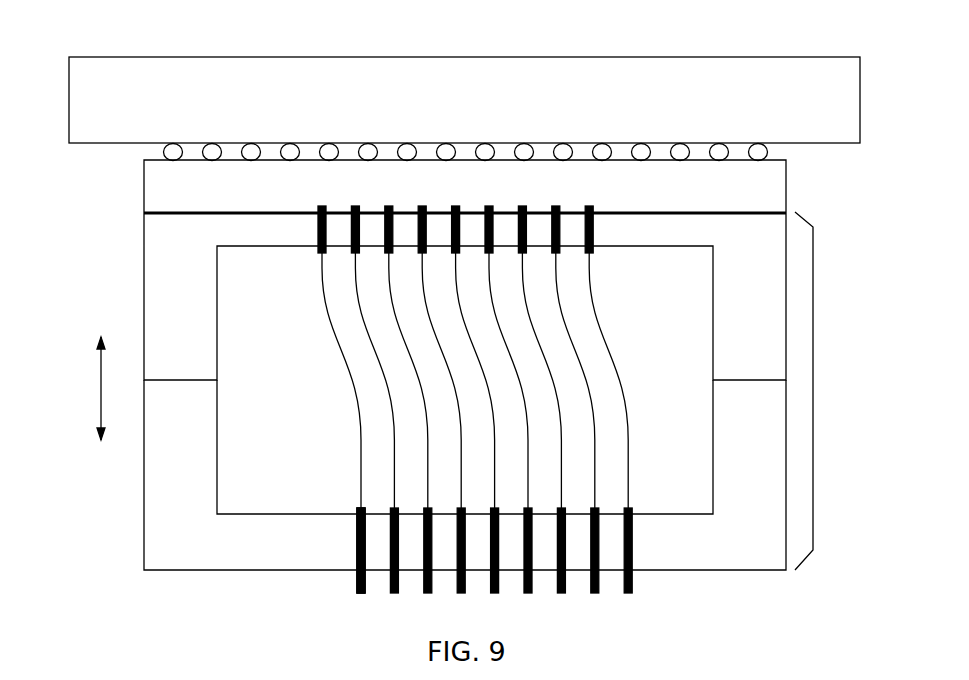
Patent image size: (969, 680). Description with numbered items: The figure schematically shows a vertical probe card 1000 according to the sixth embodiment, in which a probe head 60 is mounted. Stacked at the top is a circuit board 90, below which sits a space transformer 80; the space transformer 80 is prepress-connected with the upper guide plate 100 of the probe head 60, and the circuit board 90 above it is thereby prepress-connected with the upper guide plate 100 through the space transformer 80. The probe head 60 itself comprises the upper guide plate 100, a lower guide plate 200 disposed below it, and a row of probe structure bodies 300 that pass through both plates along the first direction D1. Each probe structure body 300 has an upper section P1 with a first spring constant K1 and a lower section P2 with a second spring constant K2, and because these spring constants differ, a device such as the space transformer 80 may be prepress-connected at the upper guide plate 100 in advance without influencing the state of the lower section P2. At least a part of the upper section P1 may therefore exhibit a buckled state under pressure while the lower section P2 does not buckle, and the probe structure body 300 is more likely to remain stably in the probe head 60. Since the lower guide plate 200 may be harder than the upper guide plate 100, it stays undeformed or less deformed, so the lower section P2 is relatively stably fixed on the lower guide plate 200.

The vertical probe card 1000 is at (100, 29).
The circuit board 90 is at (810, 115).
The space transformer 80 is at (750, 202).
The upper guide plate 100 is at (772, 338).
The lower guide plate 200 is at (772, 451).
The probe structure body 300 is at (632, 543).
The probe head 60 is at (825, 391).
The upper section P1 is at (322, 275).
The first spring constant K1 is at (327, 306).
The lower section P2 is at (357, 528).
The second spring constant K2 is at (357, 550).
The first direction D1 is at (86, 388).